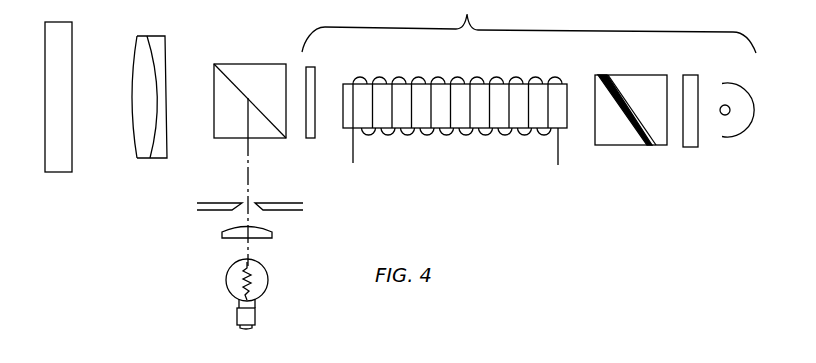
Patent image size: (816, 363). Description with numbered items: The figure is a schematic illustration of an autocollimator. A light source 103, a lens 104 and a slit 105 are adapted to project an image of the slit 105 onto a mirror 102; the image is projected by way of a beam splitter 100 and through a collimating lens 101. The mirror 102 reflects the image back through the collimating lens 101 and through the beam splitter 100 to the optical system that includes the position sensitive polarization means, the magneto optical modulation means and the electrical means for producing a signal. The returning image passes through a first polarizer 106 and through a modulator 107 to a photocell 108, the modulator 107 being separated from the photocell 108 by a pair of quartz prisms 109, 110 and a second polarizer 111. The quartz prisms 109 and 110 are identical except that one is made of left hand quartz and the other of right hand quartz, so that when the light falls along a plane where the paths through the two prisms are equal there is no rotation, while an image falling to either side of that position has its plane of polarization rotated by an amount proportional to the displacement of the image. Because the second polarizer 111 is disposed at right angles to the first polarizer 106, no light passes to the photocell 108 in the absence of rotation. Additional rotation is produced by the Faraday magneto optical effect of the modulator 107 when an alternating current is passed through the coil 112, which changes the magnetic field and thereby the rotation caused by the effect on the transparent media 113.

The beam splitter 100 is at (233, 139).
The collimating lens 101 is at (137, 159).
The mirror 102 is at (71, 151).
The light source 103 is at (262, 289).
The lens 104 is at (270, 237).
The slit 105 is at (287, 204).
The first polarizer 106 is at (314, 76).
The modulator 107 is at (455, 106).
The photocell 108 is at (722, 83).
The quartz prism 109 is at (598, 76).
The quartz prism 110 is at (627, 75).
The second polarizer 111 is at (688, 75).
The coil 112 is at (393, 107).
The transparent media 113 is at (445, 130).